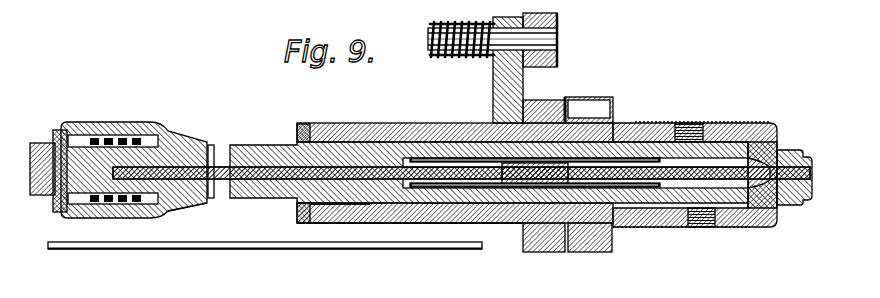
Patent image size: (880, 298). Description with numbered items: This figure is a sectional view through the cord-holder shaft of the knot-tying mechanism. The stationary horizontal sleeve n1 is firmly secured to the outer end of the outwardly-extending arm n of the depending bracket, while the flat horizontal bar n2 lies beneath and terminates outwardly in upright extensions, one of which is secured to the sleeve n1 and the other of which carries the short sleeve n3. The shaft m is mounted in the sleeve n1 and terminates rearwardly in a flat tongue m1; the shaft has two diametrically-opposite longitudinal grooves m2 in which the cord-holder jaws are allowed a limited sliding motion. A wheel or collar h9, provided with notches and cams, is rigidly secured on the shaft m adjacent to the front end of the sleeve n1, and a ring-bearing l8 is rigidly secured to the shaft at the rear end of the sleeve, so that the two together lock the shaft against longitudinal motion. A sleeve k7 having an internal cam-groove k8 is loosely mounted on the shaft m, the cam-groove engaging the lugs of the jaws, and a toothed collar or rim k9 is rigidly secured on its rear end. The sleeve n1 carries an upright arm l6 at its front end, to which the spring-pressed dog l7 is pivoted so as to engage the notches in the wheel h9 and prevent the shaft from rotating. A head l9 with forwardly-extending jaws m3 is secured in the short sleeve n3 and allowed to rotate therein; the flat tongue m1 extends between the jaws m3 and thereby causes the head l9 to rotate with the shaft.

The short sleeve n3 is at (137, 158).
The head l9 is at (420, 171).
The forwardly-extending jaws m3 is at (200, 209).
The flat tongue m1 is at (256, 166).
The longitudinal grooves m2 is at (420, 158).
The shaft m is at (462, 141).
The ring-bearing l8 is at (308, 124).
The sleeve n1 is at (486, 222).
The collar or rim k9 is at (612, 238).
The upright arm l6 is at (493, 70).
The wheel or collar h9 is at (545, 100).
The spring-pressed dog l7 is at (428, 33).
The sleeve k7 is at (624, 124).
The internal cam-groove k8 is at (690, 124).
The outwardly-extending arm n is at (780, 155).
The flat horizontal bar n2 is at (265, 237).